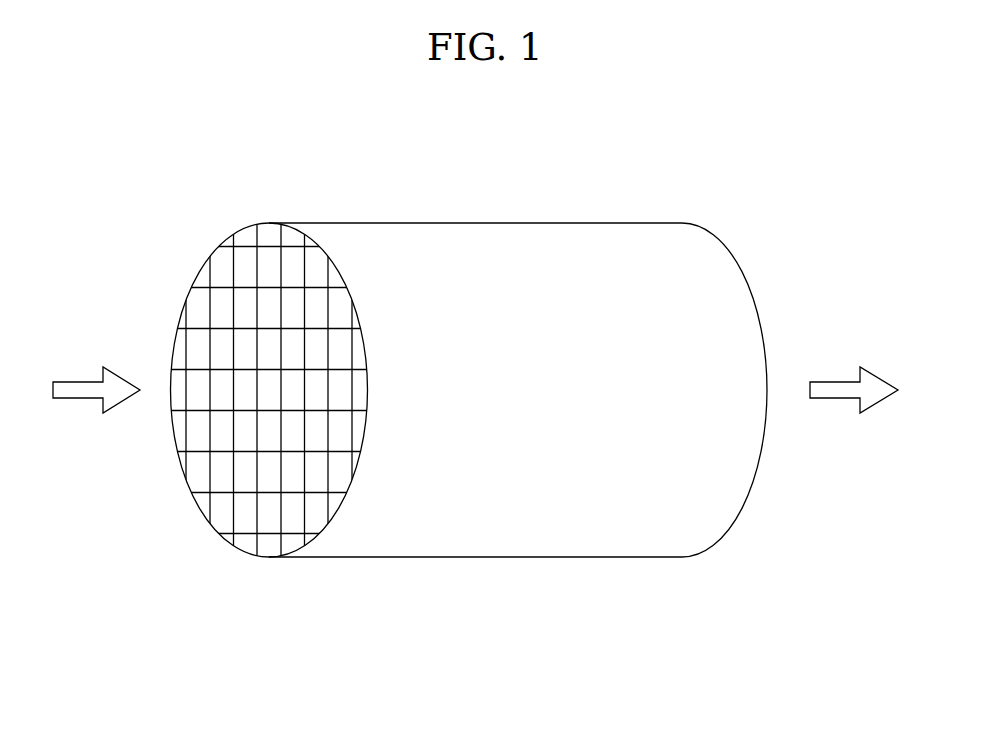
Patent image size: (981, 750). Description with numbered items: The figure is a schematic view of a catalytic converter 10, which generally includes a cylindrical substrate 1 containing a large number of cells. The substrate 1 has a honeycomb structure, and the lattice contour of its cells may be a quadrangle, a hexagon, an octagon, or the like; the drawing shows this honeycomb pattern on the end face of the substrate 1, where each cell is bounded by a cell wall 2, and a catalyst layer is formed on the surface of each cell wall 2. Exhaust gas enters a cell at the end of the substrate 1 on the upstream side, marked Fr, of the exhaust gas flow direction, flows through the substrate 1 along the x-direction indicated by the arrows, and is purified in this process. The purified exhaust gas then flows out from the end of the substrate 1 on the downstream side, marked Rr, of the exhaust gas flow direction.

The substrate 1 is at (510, 240).
The cell wall 2 is at (234, 510).
The catalytic converter 10 is at (687, 617).
The upstream side Fr is at (183, 242).
The downstream side Rr is at (755, 242).